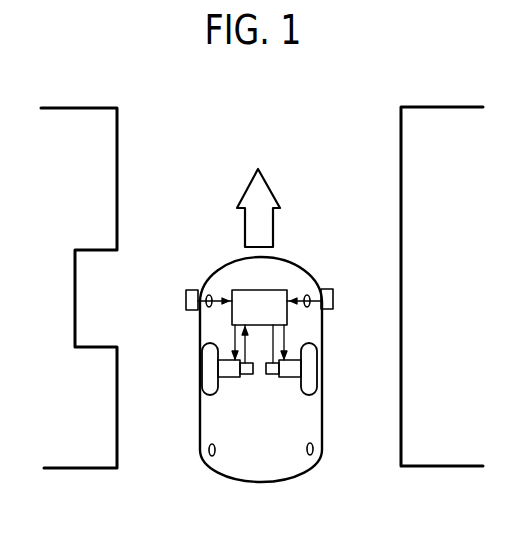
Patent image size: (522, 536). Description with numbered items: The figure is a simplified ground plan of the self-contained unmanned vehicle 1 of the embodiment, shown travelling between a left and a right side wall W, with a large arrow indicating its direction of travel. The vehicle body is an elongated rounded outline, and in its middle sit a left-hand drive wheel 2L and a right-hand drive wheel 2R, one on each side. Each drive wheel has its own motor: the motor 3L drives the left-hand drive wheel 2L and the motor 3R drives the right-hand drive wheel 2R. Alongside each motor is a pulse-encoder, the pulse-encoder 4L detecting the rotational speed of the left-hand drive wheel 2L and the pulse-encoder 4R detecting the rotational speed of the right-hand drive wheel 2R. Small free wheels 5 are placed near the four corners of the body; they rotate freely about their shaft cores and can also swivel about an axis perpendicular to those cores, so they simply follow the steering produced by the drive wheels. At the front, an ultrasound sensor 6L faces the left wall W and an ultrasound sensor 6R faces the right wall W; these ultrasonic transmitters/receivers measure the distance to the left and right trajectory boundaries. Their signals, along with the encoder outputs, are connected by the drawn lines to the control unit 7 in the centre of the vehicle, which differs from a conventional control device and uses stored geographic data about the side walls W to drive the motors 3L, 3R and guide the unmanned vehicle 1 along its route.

The unmanned vehicle 1 is at (322, 432).
The left-hand drive wheel 2L is at (207, 357).
The right-hand drive wheel 2R is at (317, 362).
The motor for driving the left-hand drive wheel 3L is at (229, 377).
The motor for driving the right-hand drive wheel 3R is at (291, 378).
The pulse-encoder 4L is at (246, 376).
The pulse-encoder 4R is at (274, 375).
The wheels 5 is at (208, 294).
The ultrasound sensor 6L is at (186, 297).
The ultrasound sensor 6R is at (333, 297).
The control unit 7 is at (250, 297).
The side walls W is at (117, 165).